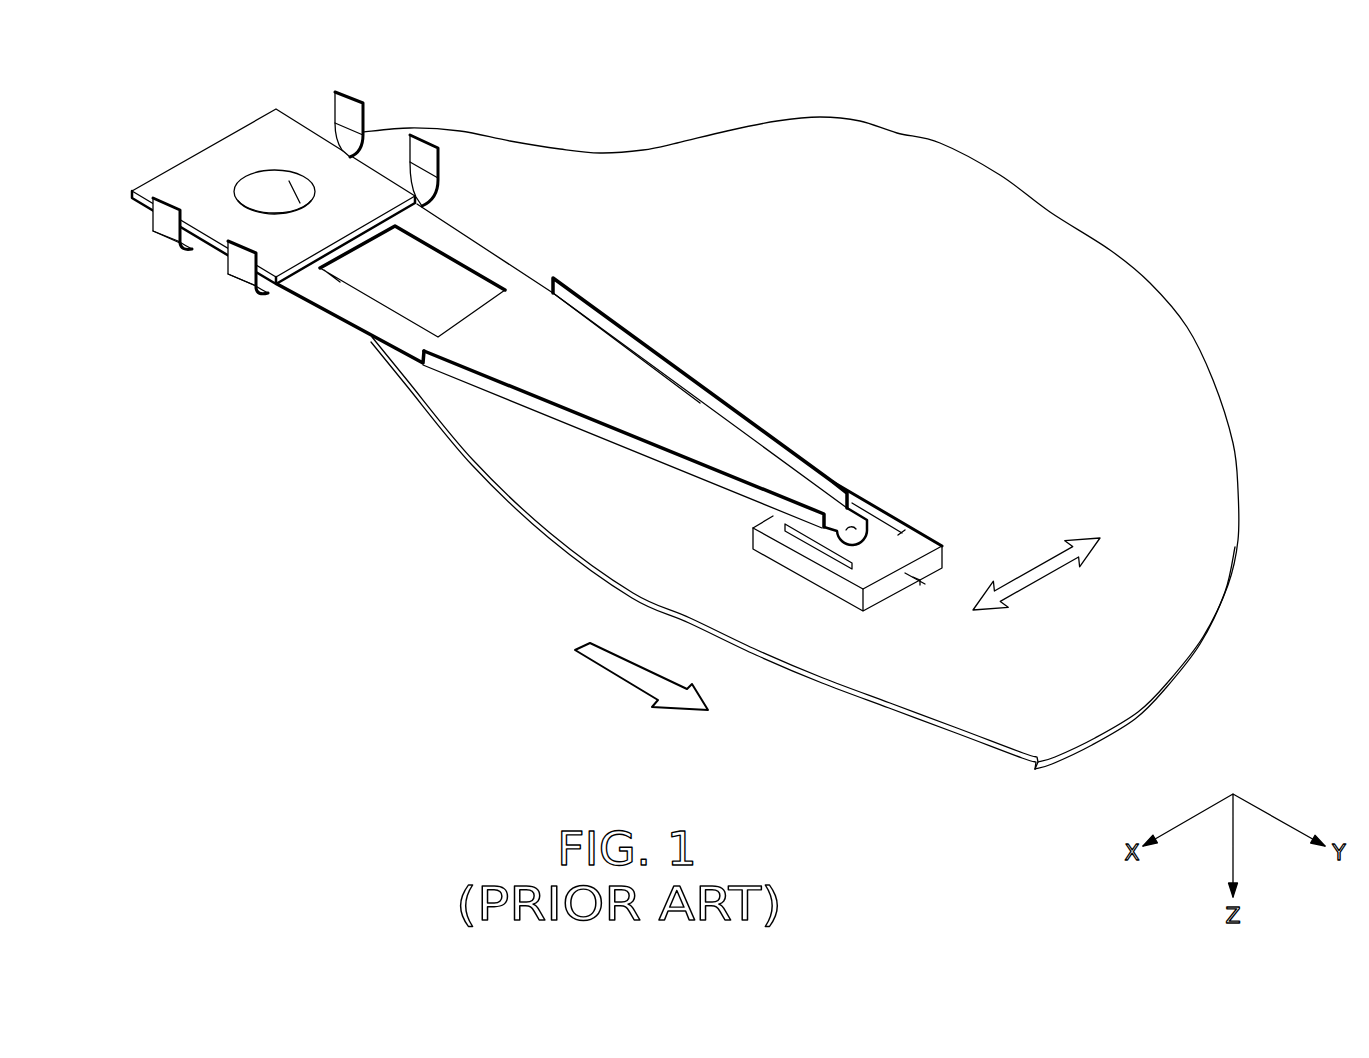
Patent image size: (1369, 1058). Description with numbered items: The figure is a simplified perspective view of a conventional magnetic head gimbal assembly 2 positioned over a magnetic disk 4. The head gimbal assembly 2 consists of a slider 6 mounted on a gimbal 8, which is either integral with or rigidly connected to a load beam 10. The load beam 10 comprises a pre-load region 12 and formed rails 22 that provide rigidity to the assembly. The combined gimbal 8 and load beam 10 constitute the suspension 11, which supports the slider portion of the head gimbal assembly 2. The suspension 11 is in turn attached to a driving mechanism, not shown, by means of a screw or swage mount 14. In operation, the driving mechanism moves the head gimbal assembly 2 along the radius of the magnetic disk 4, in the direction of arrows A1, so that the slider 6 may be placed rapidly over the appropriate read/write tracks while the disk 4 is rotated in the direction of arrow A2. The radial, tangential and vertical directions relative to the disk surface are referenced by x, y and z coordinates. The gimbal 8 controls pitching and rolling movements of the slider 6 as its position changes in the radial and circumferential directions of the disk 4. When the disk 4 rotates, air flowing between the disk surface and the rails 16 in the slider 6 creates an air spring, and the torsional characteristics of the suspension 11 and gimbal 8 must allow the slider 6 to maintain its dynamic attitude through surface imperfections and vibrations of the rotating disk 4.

The head gimbal assembly 2 is at (717, 253).
The magnetic disk 4 is at (1090, 270).
The slider 6 is at (803, 570).
The gimbal 8 is at (880, 540).
The load beam 10 is at (548, 360).
The suspension 11 is at (698, 388).
The pre-load region 12 is at (493, 268).
The screw or swage mount 14 is at (200, 173).
The rails 16 is at (915, 578).
The formed rails 22 is at (733, 418).
The arrows A1 is at (1043, 573).
The arrow A2 is at (612, 668).